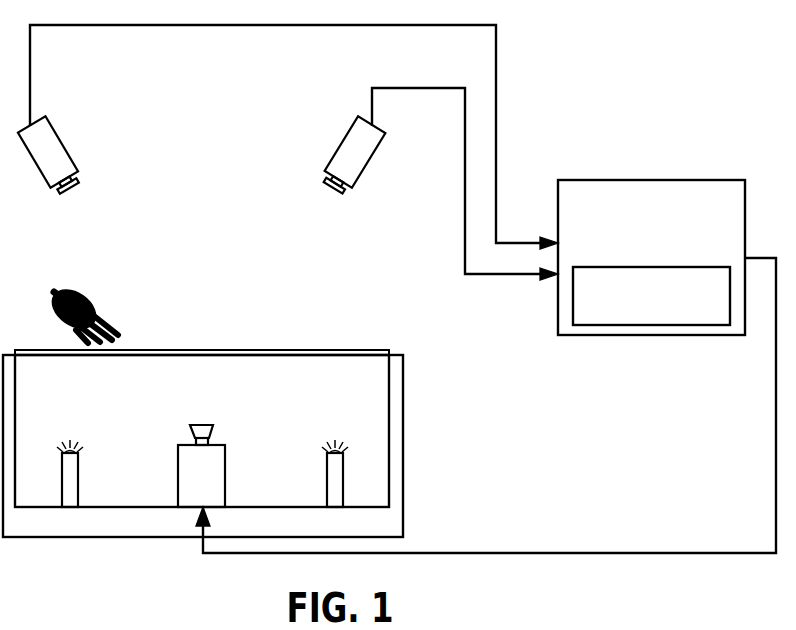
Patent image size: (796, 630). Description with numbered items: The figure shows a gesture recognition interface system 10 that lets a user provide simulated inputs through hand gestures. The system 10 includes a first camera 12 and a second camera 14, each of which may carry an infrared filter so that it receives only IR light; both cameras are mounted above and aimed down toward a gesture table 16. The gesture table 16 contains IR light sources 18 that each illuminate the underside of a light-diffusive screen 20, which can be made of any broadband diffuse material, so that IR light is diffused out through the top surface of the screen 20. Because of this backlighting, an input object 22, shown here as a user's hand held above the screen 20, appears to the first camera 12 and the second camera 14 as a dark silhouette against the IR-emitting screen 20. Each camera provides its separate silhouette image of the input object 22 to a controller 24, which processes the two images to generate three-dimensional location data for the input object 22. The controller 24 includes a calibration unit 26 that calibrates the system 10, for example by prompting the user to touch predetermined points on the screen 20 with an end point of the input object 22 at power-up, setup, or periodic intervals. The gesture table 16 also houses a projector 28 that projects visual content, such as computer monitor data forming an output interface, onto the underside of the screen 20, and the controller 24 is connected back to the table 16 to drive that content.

The gesture recognition interface system 10 is at (715, 30).
The first camera 12 is at (58, 137).
The second camera 14 is at (331, 164).
The gesture table 16 is at (404, 413).
The IR light sources 18 is at (78, 473).
The light-diffusive screen 20 is at (357, 352).
The input object 22 is at (95, 302).
The controller 24 is at (699, 180).
The calibration unit 26 is at (648, 326).
The projector 28 is at (218, 445).